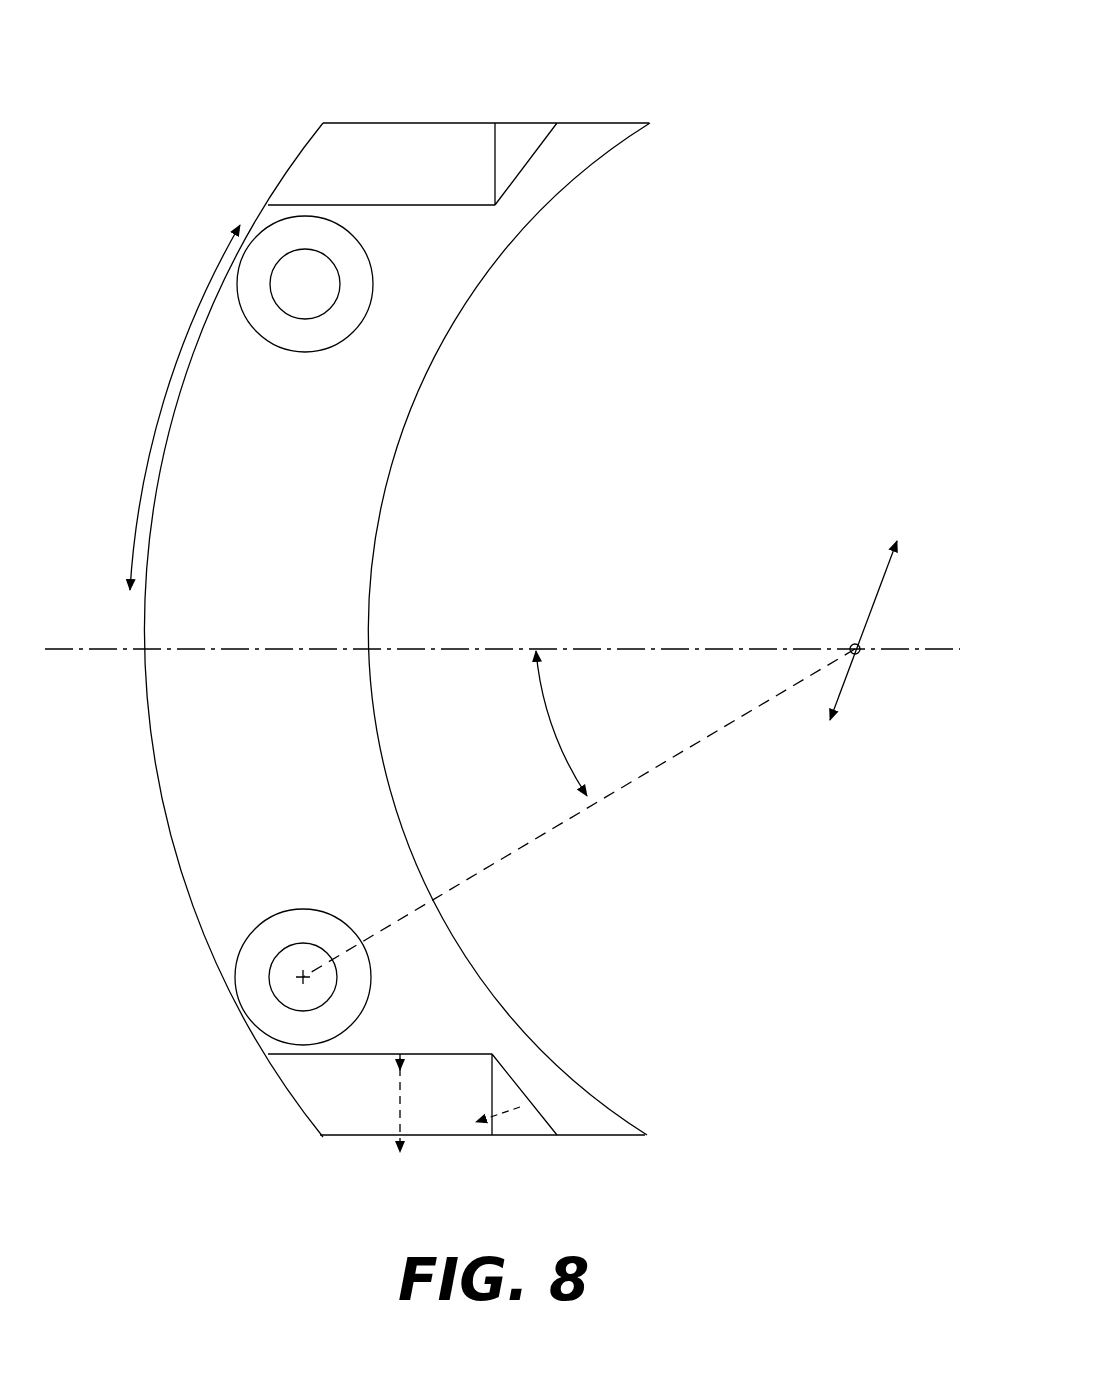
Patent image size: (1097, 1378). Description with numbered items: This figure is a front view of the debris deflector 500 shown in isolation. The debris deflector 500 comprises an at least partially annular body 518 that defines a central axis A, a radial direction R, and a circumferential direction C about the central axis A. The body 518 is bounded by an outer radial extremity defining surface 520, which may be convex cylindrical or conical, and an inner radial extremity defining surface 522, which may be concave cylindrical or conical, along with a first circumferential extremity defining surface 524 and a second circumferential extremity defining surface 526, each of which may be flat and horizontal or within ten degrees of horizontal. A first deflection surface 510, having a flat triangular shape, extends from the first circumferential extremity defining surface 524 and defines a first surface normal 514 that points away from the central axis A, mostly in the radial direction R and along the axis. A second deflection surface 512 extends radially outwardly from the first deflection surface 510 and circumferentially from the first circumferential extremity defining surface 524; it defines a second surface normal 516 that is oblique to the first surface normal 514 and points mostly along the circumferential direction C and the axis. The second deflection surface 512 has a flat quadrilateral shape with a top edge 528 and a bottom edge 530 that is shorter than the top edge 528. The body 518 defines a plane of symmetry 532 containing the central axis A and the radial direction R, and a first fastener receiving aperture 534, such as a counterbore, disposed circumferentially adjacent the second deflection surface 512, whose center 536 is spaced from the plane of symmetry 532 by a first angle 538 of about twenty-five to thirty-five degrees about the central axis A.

The debris deflector 500 is at (381, 620).
The first deflection surface 510 is at (514, 1096).
The second deflection surface 512 is at (402, 1066).
The first surface normal 514 is at (505, 1115).
The second surface normal 516 is at (410, 1118).
The at least partially annular body 518 is at (392, 748).
The outer radial extremity defining surface 520 is at (158, 762).
The inner radial extremity defining surface 522 is at (370, 668).
The first circumferential extremity defining surface 524 is at (612, 1135).
The second circumferential extremity defining surface 526 is at (591, 123).
The top edge 528 is at (355, 1054).
The bottom edge 530 is at (360, 1135).
The plane of symmetry 532 is at (748, 649).
The first fastener receiving aperture 534 is at (276, 1013).
The center 536 is at (303, 977).
The first angle 538 is at (545, 710).
The circumferential direction C is at (165, 395).
The central axis A is at (862, 657).
The radial direction R is at (885, 580).